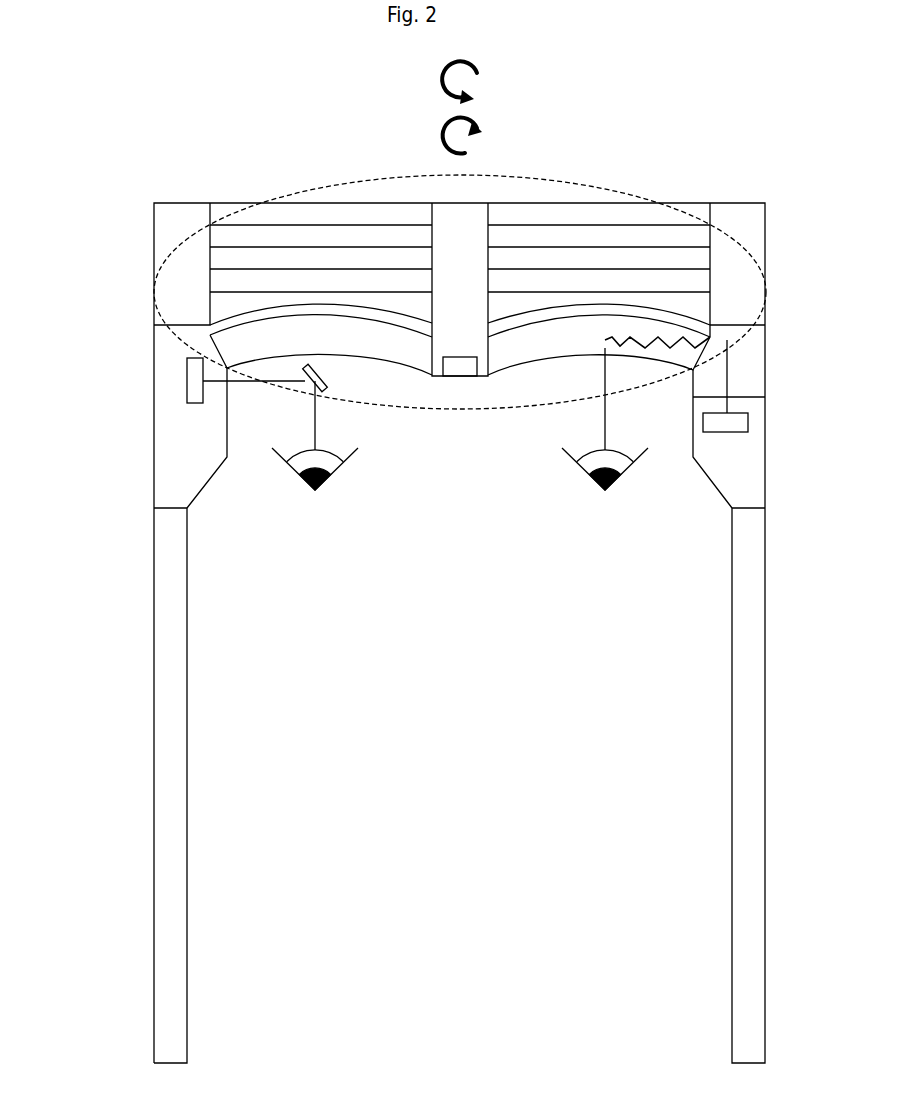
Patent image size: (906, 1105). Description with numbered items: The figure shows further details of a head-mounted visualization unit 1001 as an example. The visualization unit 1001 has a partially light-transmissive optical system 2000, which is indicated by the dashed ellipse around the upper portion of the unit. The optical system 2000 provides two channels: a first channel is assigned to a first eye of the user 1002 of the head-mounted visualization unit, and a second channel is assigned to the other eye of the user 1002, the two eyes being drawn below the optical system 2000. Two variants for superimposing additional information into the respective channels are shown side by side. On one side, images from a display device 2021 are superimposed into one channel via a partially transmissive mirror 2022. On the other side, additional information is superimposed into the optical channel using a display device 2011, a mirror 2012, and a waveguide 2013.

The visualization unit 1001 is at (100, 104).
The partially light-transmissive optical system 2000 is at (313, 188).
The display device 2021 is at (195, 403).
The partially transmissive mirror 2022 is at (330, 380).
The waveguide 2013 is at (603, 340).
The user 1002 is at (605, 493).
The display device 2011 is at (703, 422).
The mirror 2012 is at (717, 339).